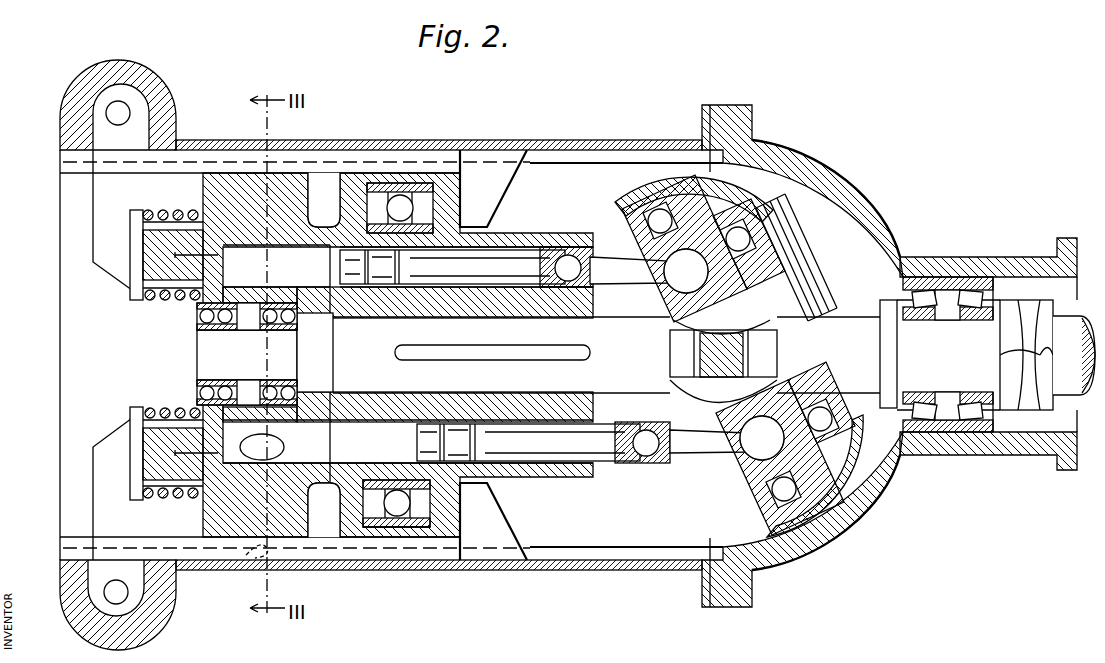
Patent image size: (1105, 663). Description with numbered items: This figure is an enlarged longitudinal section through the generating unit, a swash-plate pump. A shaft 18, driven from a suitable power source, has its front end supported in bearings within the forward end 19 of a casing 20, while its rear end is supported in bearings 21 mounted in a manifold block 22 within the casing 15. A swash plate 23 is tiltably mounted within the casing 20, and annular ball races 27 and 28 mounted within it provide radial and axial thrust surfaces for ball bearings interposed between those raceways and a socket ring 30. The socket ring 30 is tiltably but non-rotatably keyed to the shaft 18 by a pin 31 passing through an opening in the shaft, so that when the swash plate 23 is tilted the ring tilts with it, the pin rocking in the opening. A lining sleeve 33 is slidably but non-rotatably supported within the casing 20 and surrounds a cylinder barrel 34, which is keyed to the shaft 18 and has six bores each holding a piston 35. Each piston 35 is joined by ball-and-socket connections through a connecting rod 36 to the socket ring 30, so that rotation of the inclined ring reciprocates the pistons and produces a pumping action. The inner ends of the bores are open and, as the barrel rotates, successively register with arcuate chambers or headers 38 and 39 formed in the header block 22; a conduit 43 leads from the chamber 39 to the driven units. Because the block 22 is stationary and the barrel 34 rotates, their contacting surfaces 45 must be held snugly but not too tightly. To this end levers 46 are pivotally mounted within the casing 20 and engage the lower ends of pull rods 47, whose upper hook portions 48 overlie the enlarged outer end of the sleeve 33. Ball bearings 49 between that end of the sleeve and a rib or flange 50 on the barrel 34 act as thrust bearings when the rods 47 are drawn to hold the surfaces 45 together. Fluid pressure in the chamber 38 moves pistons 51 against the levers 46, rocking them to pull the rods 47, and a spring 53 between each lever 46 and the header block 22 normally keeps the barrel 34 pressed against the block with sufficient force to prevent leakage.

The casing 15 is at (536, 131).
The shaft 18 is at (205, 348).
The forward end of casing 19 is at (960, 270).
The casing 20 is at (390, 148).
The bearings 21 is at (200, 310).
The manifold block 22 is at (226, 172).
The swash plate 23 is at (770, 228).
The annular ball race 27 is at (648, 215).
The annular ball race 28 is at (800, 246).
The socket ring 30 is at (718, 202).
The pin 31 is at (748, 325).
The lining sleeve 33 is at (445, 200).
The cylinder barrel 34 is at (508, 240).
The piston 35 is at (556, 247).
The connecting rod 36 is at (613, 280).
The arcuate chamber 38 is at (282, 276).
The arcuate chamber 39 is at (315, 444).
The conduit 43 is at (276, 457).
The contacting surfaces 45 is at (336, 200).
The lever 46 is at (100, 203).
The pull rod 47 is at (75, 166).
The hook portion 48 is at (500, 205).
The ball bearings 49 is at (410, 520).
The rib or flange 50 is at (350, 515).
The piston 51 is at (150, 262).
The spring 53 is at (165, 212).